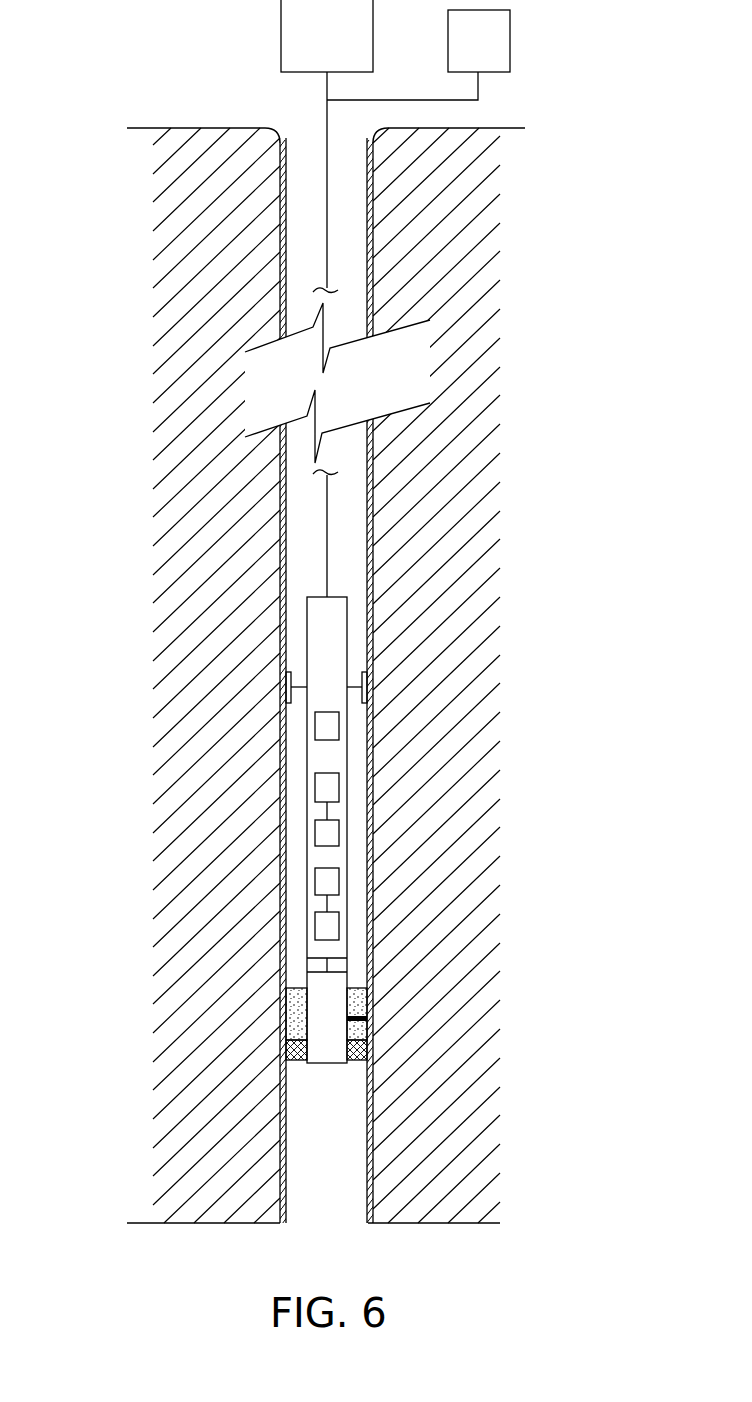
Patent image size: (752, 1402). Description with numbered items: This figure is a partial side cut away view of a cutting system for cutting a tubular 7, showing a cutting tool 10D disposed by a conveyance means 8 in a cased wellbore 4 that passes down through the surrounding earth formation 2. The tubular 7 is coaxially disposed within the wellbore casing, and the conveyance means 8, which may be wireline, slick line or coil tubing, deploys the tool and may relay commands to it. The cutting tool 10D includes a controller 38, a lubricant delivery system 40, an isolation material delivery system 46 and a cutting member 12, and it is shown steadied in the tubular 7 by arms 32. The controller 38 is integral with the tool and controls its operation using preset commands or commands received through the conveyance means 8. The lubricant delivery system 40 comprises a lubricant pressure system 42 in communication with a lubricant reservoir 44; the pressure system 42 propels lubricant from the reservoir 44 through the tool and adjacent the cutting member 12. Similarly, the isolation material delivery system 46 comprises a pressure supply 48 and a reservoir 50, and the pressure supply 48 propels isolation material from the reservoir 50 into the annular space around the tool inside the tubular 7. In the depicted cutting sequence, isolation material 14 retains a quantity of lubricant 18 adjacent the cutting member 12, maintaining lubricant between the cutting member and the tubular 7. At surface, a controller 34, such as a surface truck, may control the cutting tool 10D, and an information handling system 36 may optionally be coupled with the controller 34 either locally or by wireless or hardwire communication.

The earth formation 2 is at (222, 158).
The cased wellbore 4 is at (276, 105).
The tubular 7 is at (370, 218).
The conveyance means 8 is at (328, 509).
The cutting tool 10D is at (307, 636).
The cutting member 12 is at (358, 1012).
The isolation material 14 is at (283, 1057).
The fluid 18 is at (298, 1008).
The anchoring arms 32 is at (392, 687).
The controller 34 is at (313, 43).
The information handling system 36 is at (465, 56).
The controller 38 is at (318, 725).
The lubricant delivery system 40 is at (258, 805).
The lubricant pressure system 42 is at (328, 790).
The lubricant reservoir 44 is at (328, 835).
The isolation material delivery system 46 is at (258, 899).
The pressure supply 48 is at (328, 888).
The reservoir 50 is at (328, 930).